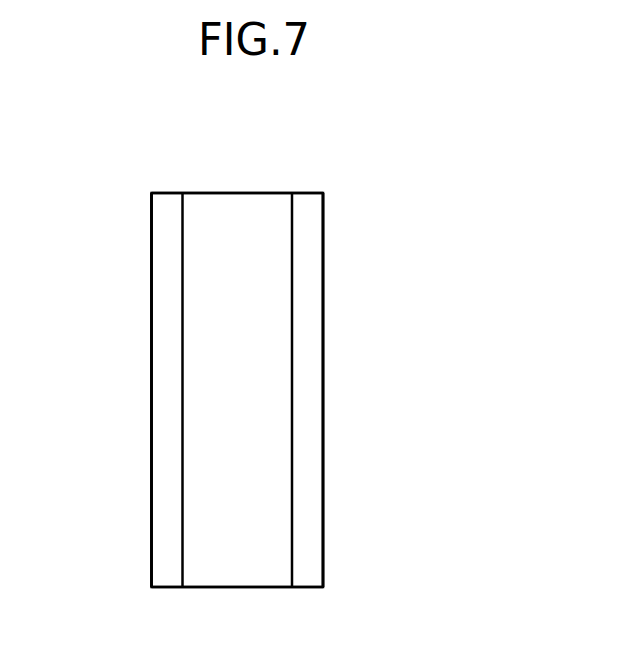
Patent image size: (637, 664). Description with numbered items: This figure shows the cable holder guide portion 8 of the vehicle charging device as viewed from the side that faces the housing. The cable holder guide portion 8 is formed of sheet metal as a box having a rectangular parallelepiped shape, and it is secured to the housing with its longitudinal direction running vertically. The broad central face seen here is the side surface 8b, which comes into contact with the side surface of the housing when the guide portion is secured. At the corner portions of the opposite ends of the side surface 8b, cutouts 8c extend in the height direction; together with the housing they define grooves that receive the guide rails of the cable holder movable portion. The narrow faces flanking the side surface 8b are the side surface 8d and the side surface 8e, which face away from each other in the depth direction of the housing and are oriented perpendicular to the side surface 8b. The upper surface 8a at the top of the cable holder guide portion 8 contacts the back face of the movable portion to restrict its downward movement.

The cable holder guide portion 8 is at (338, 147).
The upper surface 8a is at (240, 192).
The side surface 8b is at (255, 283).
The cutouts 8c is at (162, 379).
The side surface 8d is at (323, 517).
The side surface 8e is at (151, 517).